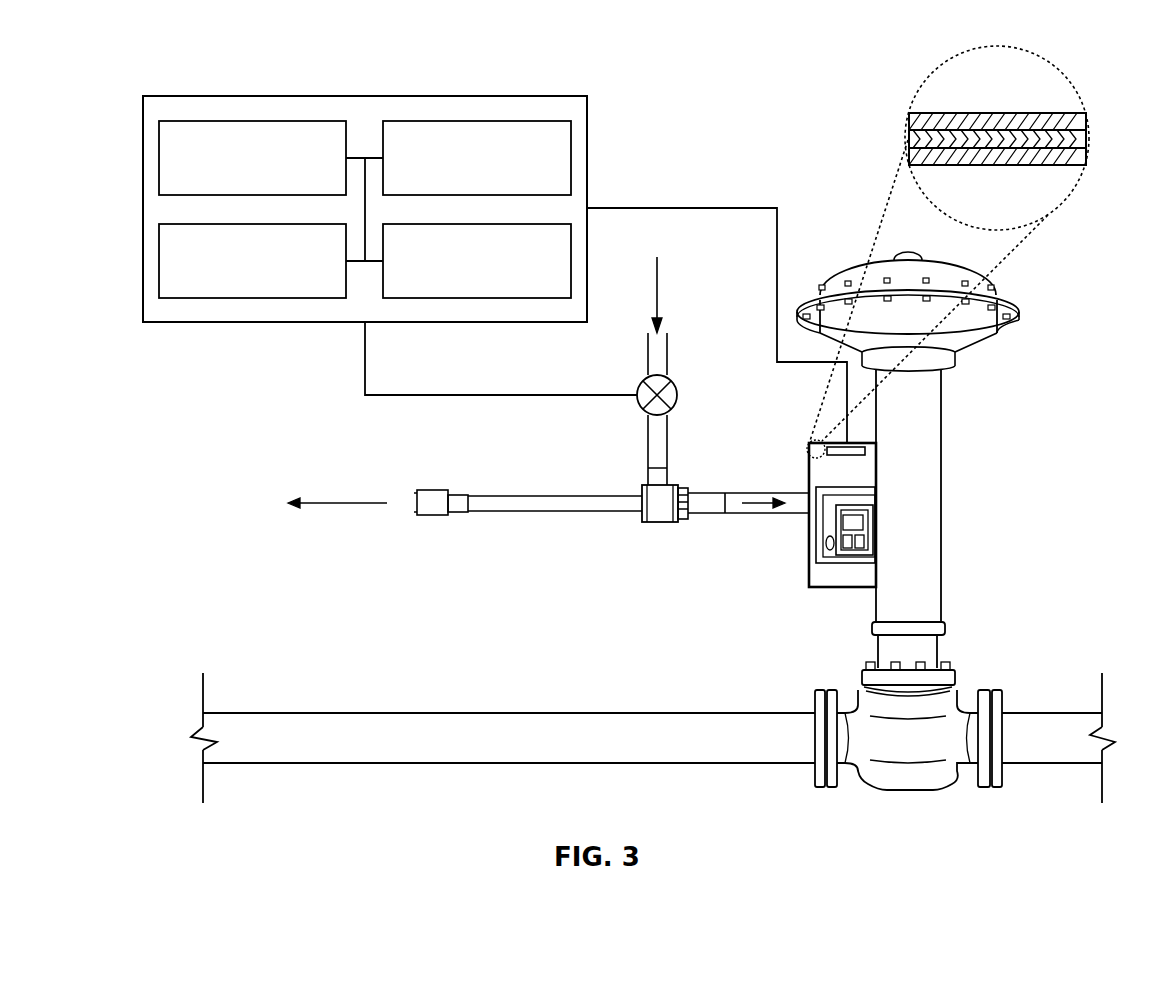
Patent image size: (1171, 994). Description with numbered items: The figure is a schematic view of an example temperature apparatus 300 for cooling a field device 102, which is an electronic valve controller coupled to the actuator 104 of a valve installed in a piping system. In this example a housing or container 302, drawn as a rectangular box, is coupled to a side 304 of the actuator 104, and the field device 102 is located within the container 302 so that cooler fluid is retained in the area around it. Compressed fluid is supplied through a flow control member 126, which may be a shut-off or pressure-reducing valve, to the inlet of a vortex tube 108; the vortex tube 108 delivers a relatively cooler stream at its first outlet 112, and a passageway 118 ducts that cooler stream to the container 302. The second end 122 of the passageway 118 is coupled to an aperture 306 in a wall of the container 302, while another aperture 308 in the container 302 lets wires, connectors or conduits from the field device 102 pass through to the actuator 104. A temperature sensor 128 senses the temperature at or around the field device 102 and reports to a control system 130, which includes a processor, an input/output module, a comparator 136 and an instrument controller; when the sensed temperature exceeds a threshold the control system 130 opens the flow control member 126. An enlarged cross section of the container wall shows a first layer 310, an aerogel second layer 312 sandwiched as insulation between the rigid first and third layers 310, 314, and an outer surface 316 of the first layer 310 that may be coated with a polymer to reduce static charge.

The field device 102 is at (815, 545).
The actuator 104 is at (955, 278).
The vortex tube 108 is at (603, 511).
The first outlet 112 is at (715, 505).
The passageway 118 is at (785, 515).
The second end 122 is at (809, 498).
The flow control member 126 is at (640, 383).
The temperature sensor 128 is at (838, 443).
The control system 130 is at (458, 96).
The comparator 136 is at (575, 142).
The temperature apparatus 300 is at (699, 170).
The container 302 is at (809, 446).
The side 304 is at (872, 605).
The aperture 306 is at (809, 508).
The aperture 308 is at (878, 520).
The first layer 310 is at (1075, 122).
The second layer 312 is at (1077, 138).
The third layer 314 is at (1078, 158).
The outer surface 316 is at (930, 113).